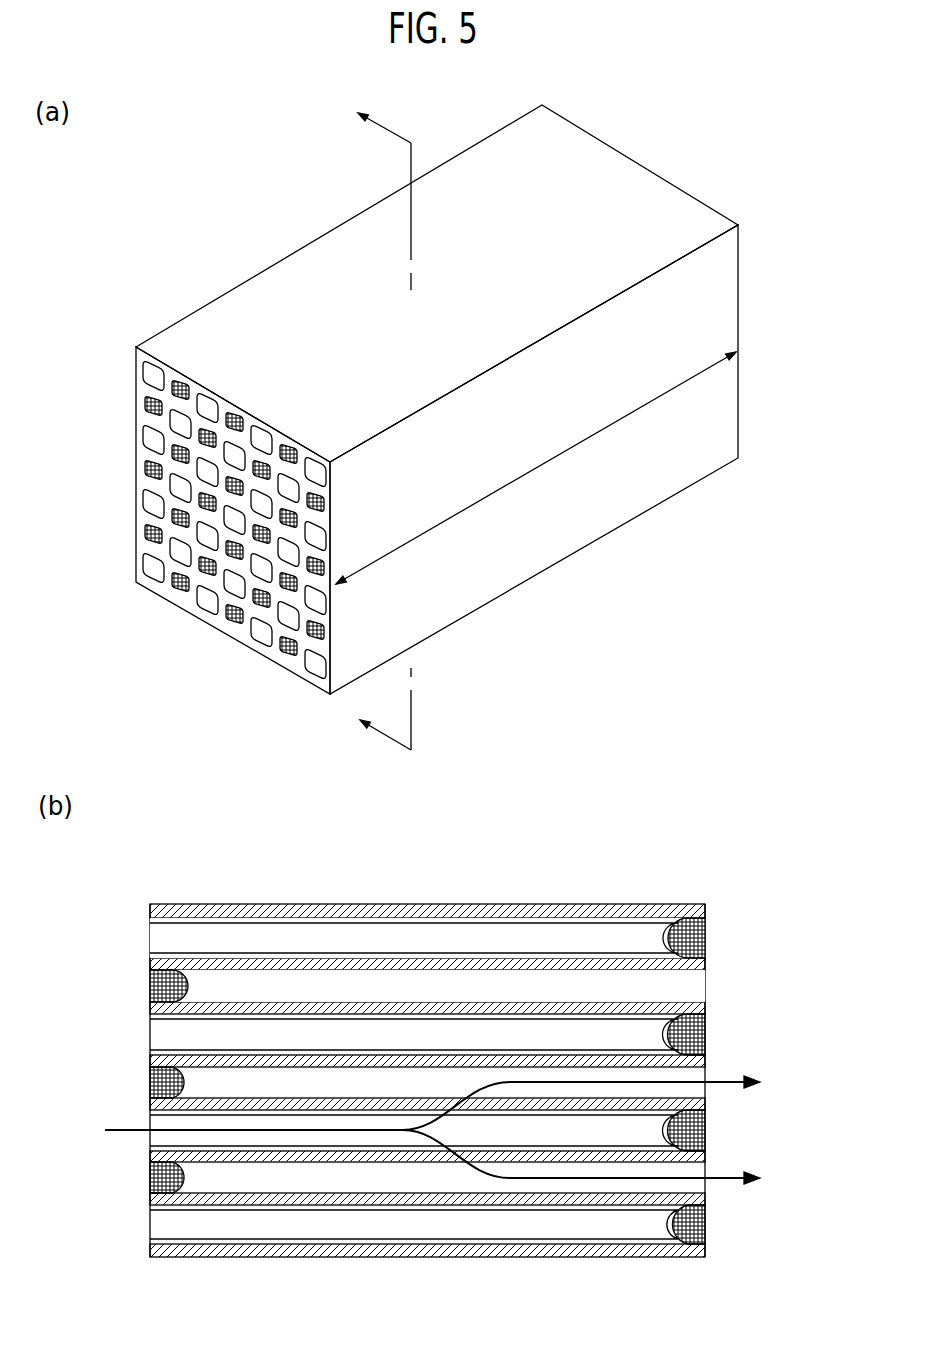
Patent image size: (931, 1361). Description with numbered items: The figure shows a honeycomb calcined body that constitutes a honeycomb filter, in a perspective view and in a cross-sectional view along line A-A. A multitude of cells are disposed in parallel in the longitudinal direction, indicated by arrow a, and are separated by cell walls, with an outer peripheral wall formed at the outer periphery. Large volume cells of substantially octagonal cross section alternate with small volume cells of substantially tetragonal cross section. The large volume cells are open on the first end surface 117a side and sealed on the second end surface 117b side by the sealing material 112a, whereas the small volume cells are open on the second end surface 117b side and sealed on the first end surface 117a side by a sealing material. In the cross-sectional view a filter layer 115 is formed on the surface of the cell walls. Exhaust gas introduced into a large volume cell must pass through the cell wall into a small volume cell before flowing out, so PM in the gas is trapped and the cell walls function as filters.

The sealing material 112a is at (700, 937).
The filter layer 115 is at (585, 922).
The first end surface 117a is at (150, 1197).
The second end surface 117b is at (705, 1200).